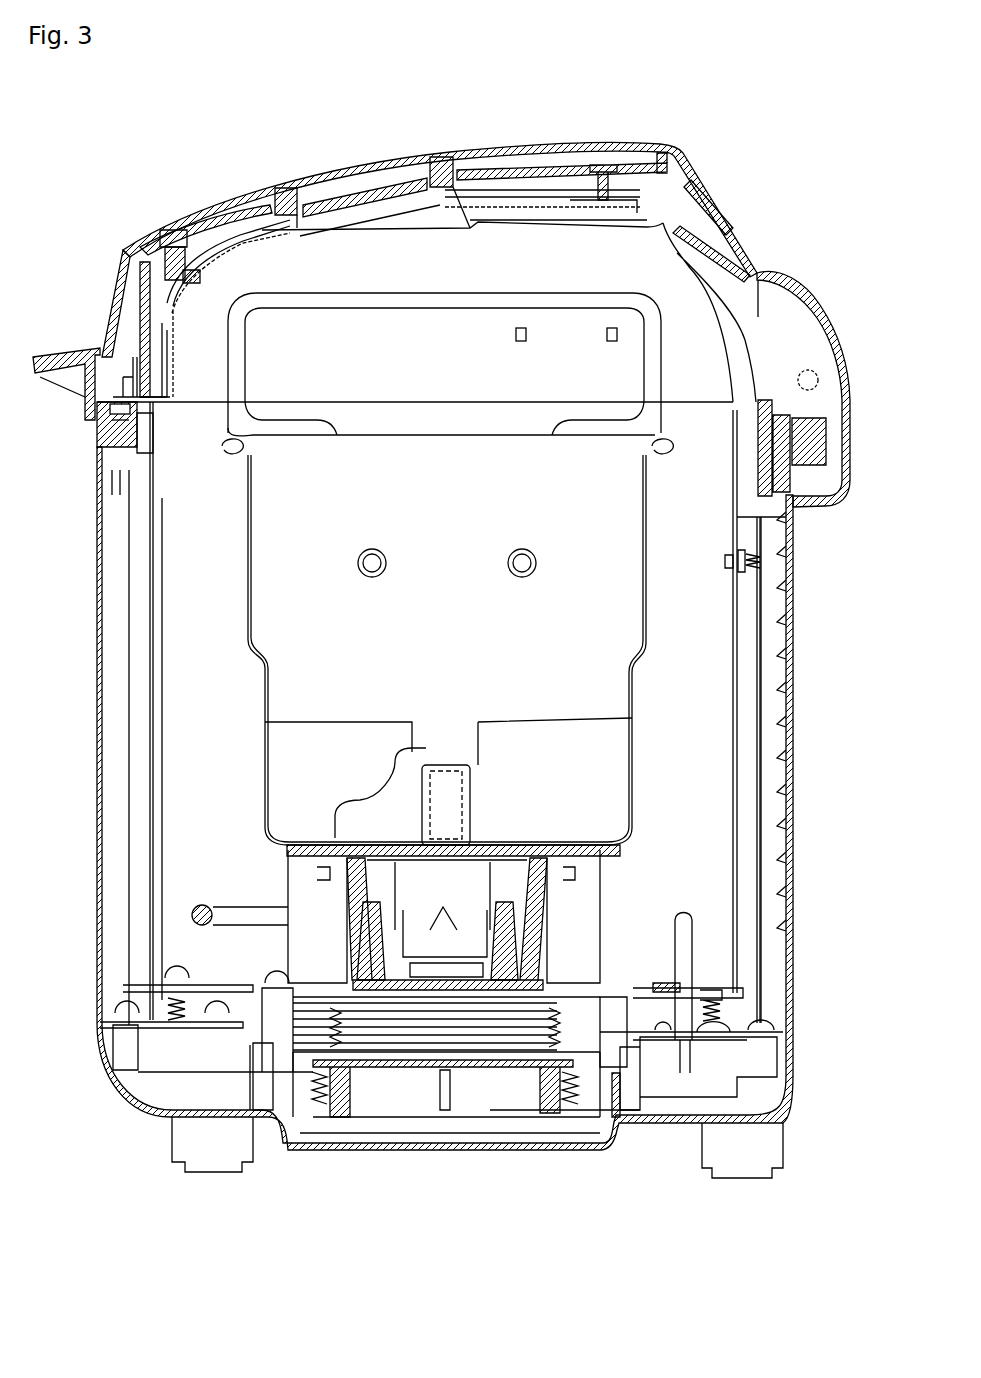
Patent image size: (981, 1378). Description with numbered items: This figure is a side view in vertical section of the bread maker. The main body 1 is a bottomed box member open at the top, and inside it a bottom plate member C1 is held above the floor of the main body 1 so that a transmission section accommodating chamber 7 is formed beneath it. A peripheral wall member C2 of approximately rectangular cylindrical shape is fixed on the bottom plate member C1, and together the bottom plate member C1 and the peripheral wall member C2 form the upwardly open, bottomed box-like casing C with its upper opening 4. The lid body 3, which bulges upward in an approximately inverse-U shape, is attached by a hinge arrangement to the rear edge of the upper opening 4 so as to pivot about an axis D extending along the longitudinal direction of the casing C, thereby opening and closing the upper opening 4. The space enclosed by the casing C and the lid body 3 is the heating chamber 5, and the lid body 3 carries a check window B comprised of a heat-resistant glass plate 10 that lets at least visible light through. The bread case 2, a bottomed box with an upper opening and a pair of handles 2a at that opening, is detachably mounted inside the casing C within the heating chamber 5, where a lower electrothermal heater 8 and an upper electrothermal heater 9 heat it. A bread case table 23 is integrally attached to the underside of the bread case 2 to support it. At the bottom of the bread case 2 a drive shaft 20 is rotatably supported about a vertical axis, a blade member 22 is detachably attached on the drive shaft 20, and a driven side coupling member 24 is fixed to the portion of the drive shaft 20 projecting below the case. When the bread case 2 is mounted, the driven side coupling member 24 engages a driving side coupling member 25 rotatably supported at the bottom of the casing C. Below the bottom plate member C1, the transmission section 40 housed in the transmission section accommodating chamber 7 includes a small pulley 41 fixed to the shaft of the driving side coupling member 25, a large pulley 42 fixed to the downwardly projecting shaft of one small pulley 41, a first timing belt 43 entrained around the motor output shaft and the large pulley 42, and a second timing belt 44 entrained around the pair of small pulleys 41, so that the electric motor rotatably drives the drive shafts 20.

The main body 1 is at (96, 666).
The bread case 2 is at (650, 630).
The handle 2a is at (424, 308).
The lid body 3 is at (547, 142).
The upper opening 4 is at (208, 400).
The heating chamber 5 is at (637, 282).
The transmission section accommodating chamber 7 is at (425, 1128).
The lower electrothermal heater 8 is at (205, 905).
The upper electrothermal heater 9 is at (223, 257).
The heat-resistant glass plate 10 is at (385, 188).
The drive shaft 20 is at (470, 790).
The blade member 22 is at (400, 777).
The bread case table 23 is at (608, 862).
The driven side coupling member 24 is at (470, 897).
The driving side coupling member 25 is at (485, 937).
The transmission section 40 is at (330, 1128).
The small pulley 41 is at (585, 985).
The large pulley 42 is at (537, 1100).
The first timing belt 43 is at (597, 1110).
The second timing belt 44 is at (290, 1028).
The check window B is at (322, 160).
The casing C is at (735, 728).
The bottom plate member C1 is at (622, 995).
The peripheral wall member C2 is at (733, 818).
The axis D is at (808, 368).